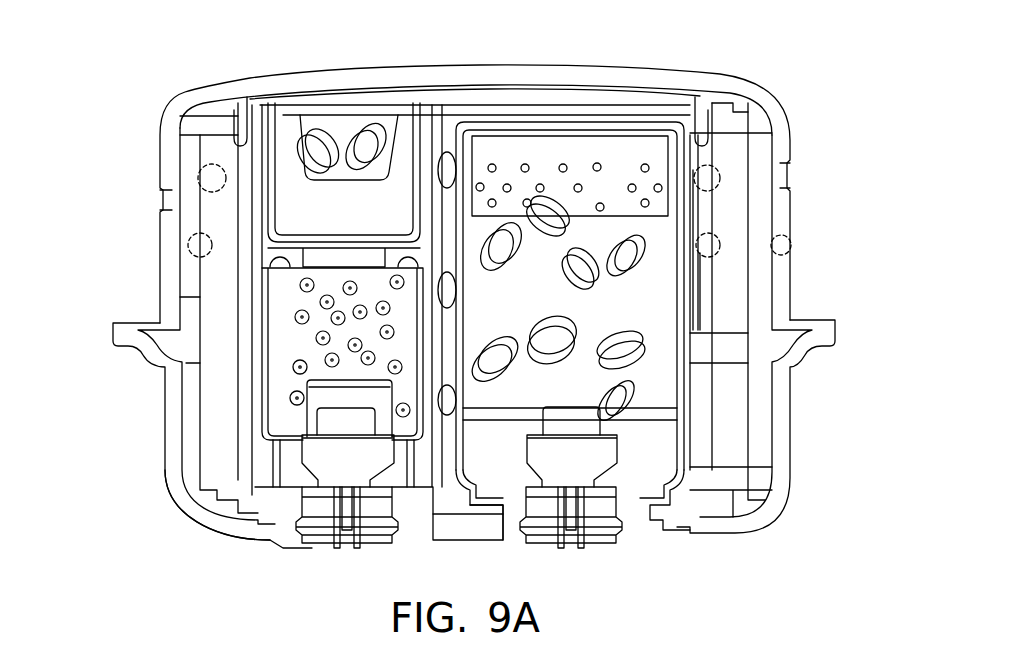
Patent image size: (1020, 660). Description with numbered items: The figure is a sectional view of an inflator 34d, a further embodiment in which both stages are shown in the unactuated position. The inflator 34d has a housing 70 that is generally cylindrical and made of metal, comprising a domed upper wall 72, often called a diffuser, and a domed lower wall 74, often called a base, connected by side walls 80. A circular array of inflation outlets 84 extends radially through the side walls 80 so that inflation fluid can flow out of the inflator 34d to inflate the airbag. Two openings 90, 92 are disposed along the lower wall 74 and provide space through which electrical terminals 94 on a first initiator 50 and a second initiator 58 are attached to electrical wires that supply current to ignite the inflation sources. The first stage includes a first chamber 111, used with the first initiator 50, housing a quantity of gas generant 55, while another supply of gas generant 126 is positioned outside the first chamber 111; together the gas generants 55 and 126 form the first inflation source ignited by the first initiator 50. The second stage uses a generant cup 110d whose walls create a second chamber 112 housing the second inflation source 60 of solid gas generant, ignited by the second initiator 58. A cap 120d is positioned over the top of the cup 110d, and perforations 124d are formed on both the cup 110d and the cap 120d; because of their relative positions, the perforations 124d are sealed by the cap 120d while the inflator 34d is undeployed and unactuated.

The inflator 34d is at (786, 75).
The upper wall 72 is at (460, 73).
The gas generant 126 is at (375, 138).
The cap 120d is at (585, 125).
The inflation outlets 84 is at (172, 210).
The housing 70 is at (785, 267).
The perforations 124d is at (495, 166).
The first chamber 111 is at (300, 337).
The side walls 80 is at (177, 392).
The gas generant 55 is at (290, 399).
The first initiator 50 is at (359, 466).
The second initiator 58 is at (583, 466).
The electrical terminals 94 is at (357, 549).
The lower wall 74 is at (470, 520).
The opening 90 is at (268, 546).
The opening 92 is at (486, 550).
The second chamber 112 is at (607, 316).
The second inflation source 60 is at (623, 340).
The generant cup 110d is at (690, 383).